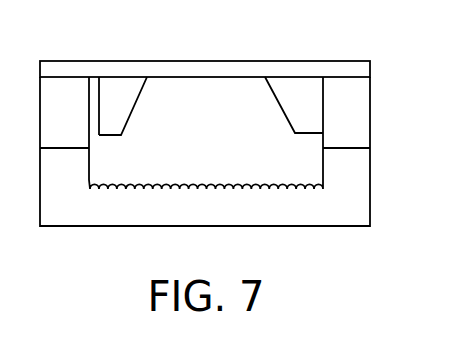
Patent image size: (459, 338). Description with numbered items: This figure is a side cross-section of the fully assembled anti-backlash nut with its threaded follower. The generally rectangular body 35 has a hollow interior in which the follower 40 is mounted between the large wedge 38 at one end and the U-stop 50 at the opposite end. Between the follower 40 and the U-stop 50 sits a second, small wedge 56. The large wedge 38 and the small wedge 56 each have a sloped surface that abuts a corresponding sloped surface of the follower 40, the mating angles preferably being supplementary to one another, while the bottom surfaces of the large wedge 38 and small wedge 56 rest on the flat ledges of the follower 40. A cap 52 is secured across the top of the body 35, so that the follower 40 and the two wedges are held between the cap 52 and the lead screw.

The body 35 is at (358, 119).
The large wedge 38 is at (293, 95).
The follower 40 is at (218, 152).
The U-stop 50 is at (95, 92).
The cap 52 is at (357, 61).
The small wedge 56 is at (115, 96).